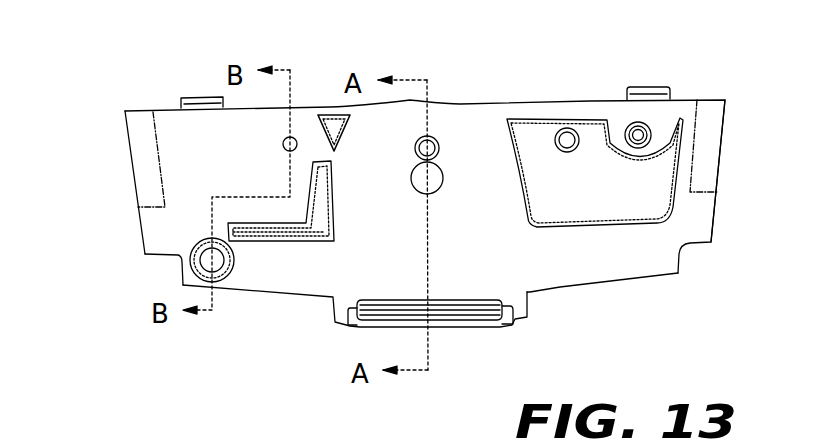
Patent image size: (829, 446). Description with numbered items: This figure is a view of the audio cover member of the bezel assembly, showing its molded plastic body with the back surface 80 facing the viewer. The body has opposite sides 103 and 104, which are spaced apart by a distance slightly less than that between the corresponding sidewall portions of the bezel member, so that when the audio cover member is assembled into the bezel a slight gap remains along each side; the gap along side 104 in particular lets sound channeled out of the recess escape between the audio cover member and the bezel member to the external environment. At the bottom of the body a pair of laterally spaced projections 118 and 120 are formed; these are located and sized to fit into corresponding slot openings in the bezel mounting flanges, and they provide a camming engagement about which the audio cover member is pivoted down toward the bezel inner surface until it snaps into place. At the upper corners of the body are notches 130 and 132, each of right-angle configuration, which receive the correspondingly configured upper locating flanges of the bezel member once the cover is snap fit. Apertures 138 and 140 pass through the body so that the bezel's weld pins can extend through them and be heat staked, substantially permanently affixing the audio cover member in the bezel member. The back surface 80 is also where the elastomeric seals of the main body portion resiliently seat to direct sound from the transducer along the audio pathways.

The side 103 is at (712, 228).
The side 104 is at (143, 242).
The notch 132 is at (177, 258).
The notch 130 is at (688, 248).
The projection 120 is at (192, 98).
The projection 118 is at (660, 87).
The aperture 138 is at (568, 137).
The aperture 140 is at (222, 273).
The back surface 80 is at (343, 277).